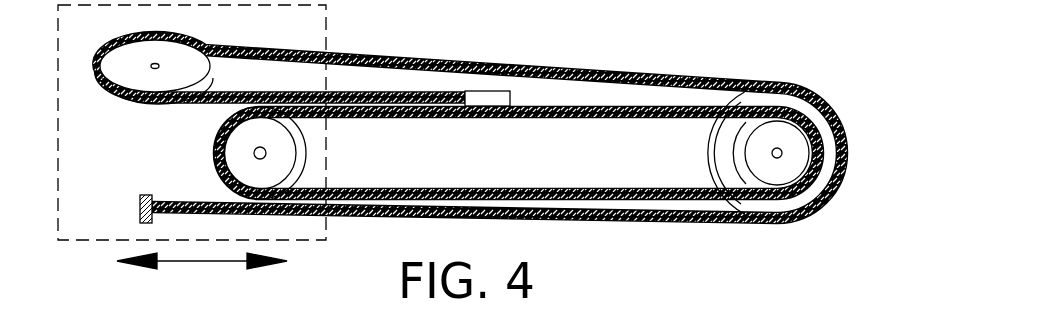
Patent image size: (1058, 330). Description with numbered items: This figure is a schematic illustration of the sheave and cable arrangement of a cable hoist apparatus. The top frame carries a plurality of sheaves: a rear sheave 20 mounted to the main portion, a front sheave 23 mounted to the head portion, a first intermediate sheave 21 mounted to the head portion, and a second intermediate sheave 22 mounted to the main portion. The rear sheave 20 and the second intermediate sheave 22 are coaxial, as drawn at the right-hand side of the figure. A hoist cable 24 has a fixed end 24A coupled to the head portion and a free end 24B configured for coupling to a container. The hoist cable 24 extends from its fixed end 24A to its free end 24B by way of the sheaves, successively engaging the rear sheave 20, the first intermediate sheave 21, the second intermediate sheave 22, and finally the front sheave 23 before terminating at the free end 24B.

The rear sheave 20 is at (730, 138).
The first intermediate sheave 21 is at (303, 150).
The second intermediate sheave 22 is at (712, 178).
The front sheave 23 is at (148, 53).
The hoist cable 24 is at (362, 57).
The fixed end 24A is at (140, 207).
The free end 24B is at (510, 91).